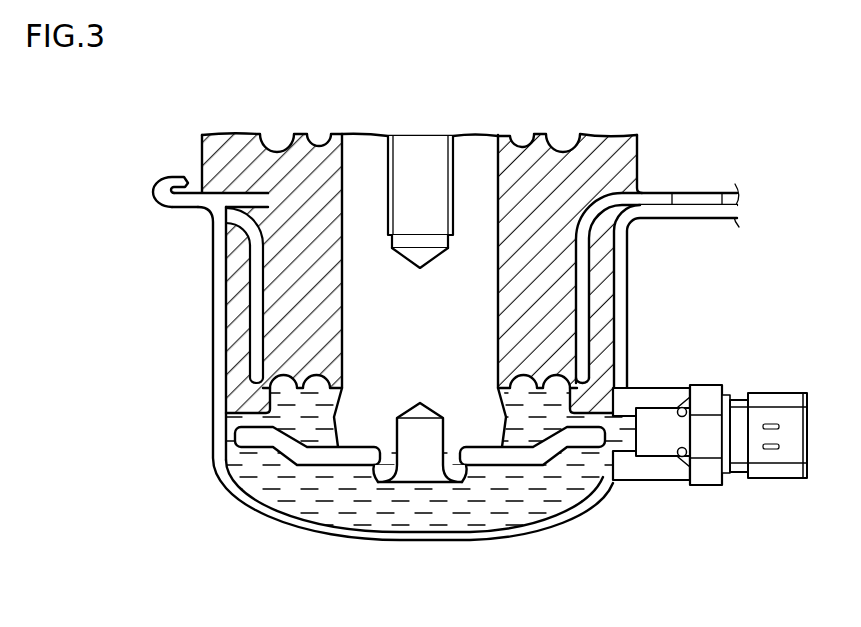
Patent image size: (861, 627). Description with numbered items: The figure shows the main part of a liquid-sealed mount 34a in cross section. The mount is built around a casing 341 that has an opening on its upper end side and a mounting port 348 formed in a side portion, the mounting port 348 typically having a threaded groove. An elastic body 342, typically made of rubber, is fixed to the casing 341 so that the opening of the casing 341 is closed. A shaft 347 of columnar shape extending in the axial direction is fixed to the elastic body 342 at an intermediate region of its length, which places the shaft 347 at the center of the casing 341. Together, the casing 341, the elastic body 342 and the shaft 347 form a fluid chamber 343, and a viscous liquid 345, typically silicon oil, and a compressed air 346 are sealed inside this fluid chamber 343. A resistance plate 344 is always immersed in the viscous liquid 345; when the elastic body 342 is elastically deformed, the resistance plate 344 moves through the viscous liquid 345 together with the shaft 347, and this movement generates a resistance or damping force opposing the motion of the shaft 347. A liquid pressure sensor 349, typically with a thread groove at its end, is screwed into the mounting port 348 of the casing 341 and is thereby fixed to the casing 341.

The liquid-sealed mount 34a is at (126, 94).
The casing 341 is at (213, 293).
The elastic body 342 is at (230, 153).
The fluid chamber 343 is at (536, 503).
The resistance plate 344 is at (340, 458).
The viscous liquid 345 is at (467, 507).
The compressed air 346 is at (278, 377).
The shaft 347 is at (474, 158).
The mounting port 348 is at (644, 367).
The liquid pressure sensor 349 is at (740, 400).